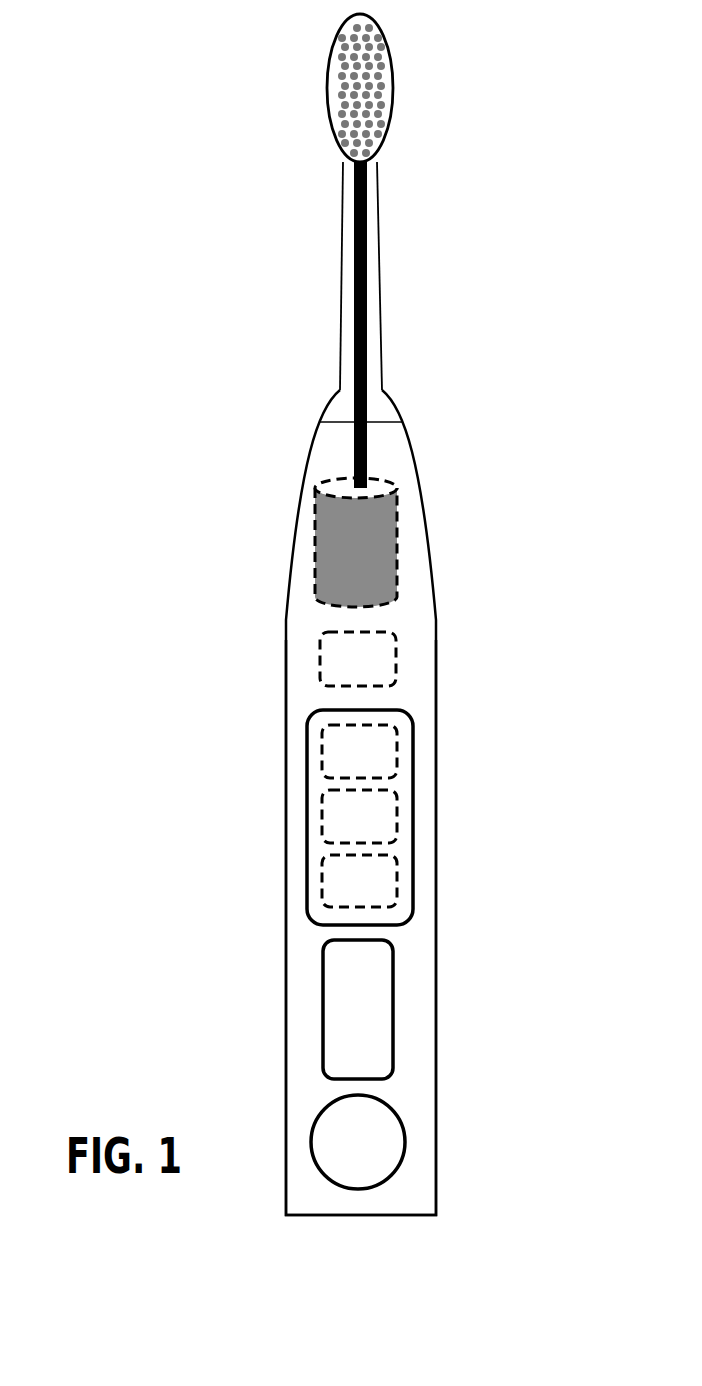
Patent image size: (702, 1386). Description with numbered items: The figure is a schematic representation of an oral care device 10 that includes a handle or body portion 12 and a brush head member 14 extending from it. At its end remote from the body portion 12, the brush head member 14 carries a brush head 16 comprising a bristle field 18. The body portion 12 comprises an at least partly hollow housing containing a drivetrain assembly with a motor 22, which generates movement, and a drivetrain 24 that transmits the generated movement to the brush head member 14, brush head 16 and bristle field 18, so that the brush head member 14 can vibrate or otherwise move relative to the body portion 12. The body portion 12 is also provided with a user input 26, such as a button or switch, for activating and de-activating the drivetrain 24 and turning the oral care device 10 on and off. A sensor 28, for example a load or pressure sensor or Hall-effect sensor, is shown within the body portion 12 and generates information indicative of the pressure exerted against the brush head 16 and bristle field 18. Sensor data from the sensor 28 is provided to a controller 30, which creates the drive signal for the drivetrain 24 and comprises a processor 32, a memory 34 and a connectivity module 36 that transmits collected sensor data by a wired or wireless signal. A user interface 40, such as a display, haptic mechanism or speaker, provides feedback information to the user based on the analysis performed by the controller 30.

The oral care device 10 is at (174, 156).
The body portion 12 is at (262, 597).
The brush head member 14 is at (326, 321).
The brush head 16 is at (332, 137).
The bristle field 18 is at (373, 77).
The motor 22 is at (393, 577).
The drivetrain 24 is at (362, 457).
The user input 26 is at (405, 1140).
The sensor 28 is at (394, 635).
The controller 30 is at (308, 727).
The processor 32 is at (395, 730).
The memory 34 is at (395, 802).
The connectivity module 36 is at (395, 867).
The user interface 40 is at (394, 995).